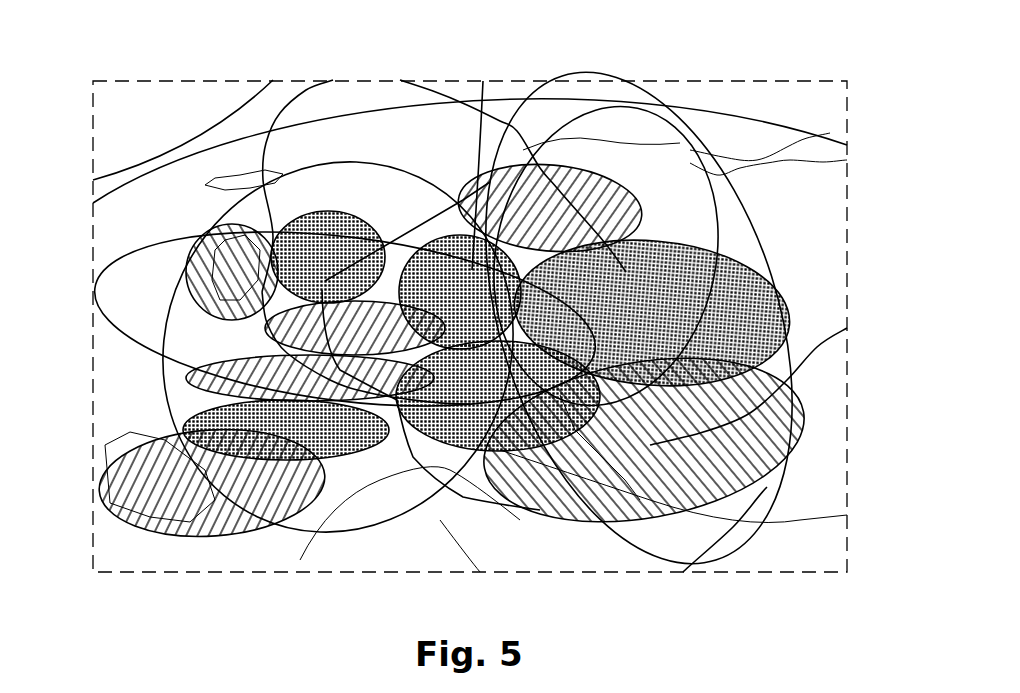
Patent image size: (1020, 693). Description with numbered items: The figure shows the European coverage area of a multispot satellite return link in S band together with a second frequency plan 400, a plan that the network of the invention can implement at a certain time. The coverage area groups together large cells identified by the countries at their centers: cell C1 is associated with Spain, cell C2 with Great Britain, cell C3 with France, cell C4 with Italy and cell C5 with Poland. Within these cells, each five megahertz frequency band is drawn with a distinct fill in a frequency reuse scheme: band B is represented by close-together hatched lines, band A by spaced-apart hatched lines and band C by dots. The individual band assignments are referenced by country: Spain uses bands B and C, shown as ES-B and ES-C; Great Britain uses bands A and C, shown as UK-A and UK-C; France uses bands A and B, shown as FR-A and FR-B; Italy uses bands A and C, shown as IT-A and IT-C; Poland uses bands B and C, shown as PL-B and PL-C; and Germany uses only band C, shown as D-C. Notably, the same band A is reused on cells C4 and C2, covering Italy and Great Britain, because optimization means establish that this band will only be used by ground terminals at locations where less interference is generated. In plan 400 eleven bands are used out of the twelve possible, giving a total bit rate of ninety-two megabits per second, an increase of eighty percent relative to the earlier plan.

The second frequency plan 400 is at (607, 56).
The cell C1 is at (143, 250).
The cell C2 is at (216, 120).
The cell C3 is at (165, 390).
The cell C4 is at (728, 555).
The cell C5 is at (835, 388).
The frequency band A for Great Britain UK-A is at (218, 227).
The frequency band C for Great Britain UK-C is at (350, 207).
The frequency band C for Germany D-C is at (407, 233).
The frequency band B for Poland PL-B is at (648, 206).
The frequency band C for Poland PL-C is at (747, 266).
The frequency band A for France FR-A is at (187, 373).
The frequency band B for France FR-B is at (268, 337).
The frequency band B for Spain ES-B is at (208, 534).
The frequency band C for Spain ES-C is at (393, 460).
The frequency band A for Italy IT-A is at (622, 520).
The frequency band C for Italy IT-C is at (458, 455).